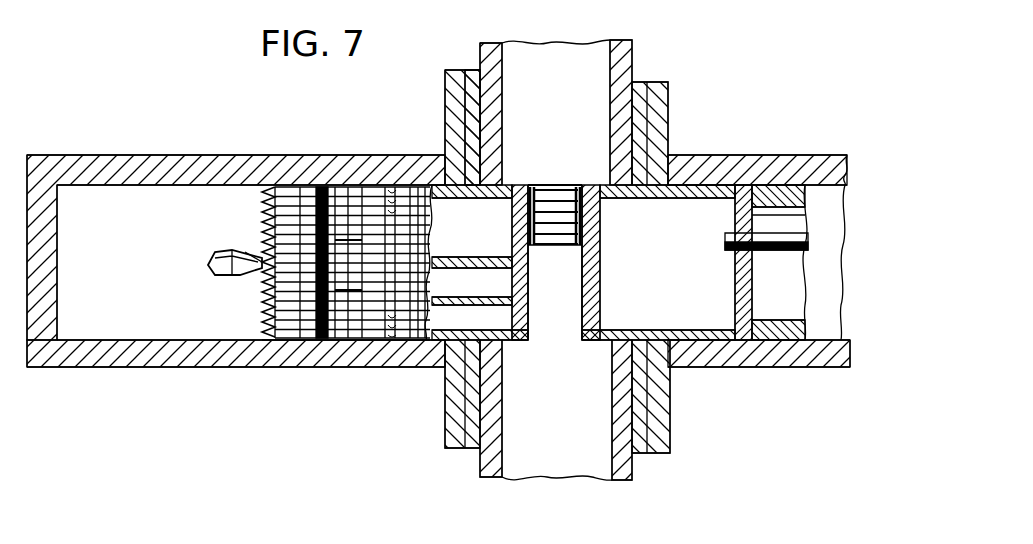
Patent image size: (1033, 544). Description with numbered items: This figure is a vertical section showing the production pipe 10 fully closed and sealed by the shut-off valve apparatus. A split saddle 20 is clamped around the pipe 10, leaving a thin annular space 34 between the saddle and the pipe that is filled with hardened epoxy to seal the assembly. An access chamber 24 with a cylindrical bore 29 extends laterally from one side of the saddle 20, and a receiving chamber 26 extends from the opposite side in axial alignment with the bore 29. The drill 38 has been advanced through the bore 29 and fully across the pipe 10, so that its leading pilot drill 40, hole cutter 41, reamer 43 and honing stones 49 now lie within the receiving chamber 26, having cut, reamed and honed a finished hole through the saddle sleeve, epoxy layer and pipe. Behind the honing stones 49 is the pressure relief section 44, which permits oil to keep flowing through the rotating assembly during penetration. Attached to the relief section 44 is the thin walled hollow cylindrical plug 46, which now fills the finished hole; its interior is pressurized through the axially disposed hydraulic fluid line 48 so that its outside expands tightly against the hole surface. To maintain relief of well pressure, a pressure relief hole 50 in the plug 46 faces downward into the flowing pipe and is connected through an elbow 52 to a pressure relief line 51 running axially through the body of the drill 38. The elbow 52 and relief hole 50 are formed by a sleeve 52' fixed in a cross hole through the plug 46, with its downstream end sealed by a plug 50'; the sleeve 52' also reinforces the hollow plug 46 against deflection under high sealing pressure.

The production pipe 10 is at (510, 60).
The saddle 20 is at (674, 99).
The access chamber 24 is at (790, 367).
The receiving chamber 26 is at (130, 155).
The cylindrical bore 29 is at (828, 305).
The annular space 34 is at (640, 90).
The drill 38 is at (287, 344).
The pilot drill 40 is at (212, 275).
The hole cutter 41 is at (262, 207).
The reamer 43 is at (285, 190).
The pressure relief section 44 is at (395, 190).
The hollow cylindrical plug 46 is at (633, 333).
The hydraulic fluid line 48 is at (770, 232).
The honing stones 49 is at (345, 190).
The pressure relief hole 50 is at (557, 370).
The plug 50' is at (563, 197).
The pressure relief line 51 is at (468, 278).
The elbow 52 is at (589, 262).
The sleeve 52' is at (551, 153).